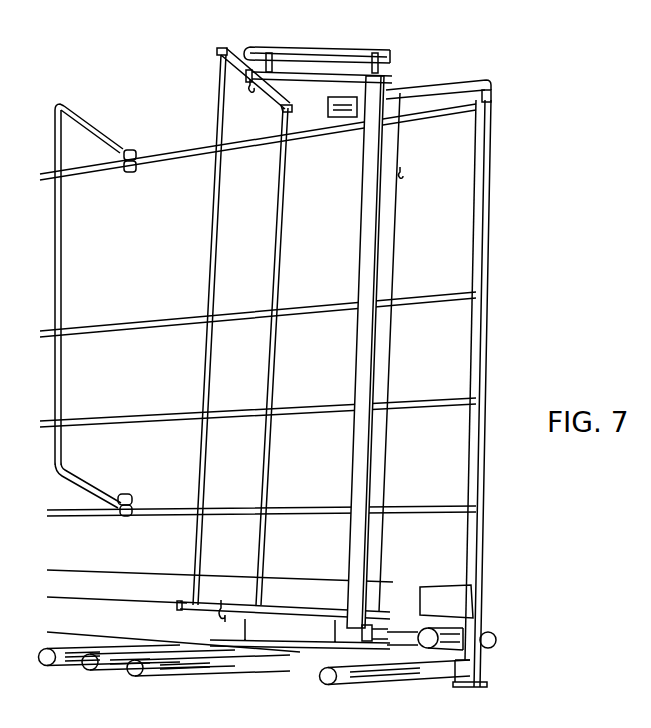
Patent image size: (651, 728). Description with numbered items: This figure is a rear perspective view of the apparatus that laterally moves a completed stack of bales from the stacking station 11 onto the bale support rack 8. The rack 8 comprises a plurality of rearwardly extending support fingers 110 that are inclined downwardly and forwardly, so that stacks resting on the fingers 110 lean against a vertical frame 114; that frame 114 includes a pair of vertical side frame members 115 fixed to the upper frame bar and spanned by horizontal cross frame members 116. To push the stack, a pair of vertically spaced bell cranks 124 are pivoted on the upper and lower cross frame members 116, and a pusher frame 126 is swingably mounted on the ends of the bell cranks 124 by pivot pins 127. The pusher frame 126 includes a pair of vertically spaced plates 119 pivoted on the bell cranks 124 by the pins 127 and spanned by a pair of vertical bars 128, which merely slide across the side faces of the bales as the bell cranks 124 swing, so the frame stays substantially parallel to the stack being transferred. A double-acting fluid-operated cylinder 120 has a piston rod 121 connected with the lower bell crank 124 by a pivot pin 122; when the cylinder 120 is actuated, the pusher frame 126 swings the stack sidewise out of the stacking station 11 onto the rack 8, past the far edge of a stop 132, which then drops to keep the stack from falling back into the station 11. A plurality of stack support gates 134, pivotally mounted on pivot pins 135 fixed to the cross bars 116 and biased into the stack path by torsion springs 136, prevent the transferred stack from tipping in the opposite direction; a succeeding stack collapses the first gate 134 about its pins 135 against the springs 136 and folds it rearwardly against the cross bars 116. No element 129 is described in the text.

The bale support rack 8 is at (65, 672).
The stacking station 11 is at (432, 545).
The support fingers 110 is at (131, 674).
The vertical frame 114 is at (493, 230).
The vertical side frame members 115 is at (488, 375).
The horizontal cross frame members 116 is at (447, 110).
The vertically spaced plates 119 is at (297, 640).
The double-acting fluid-operated cylinder 120 is at (358, 453).
The piston rod 121 is at (422, 612).
The pivot pin 122 is at (405, 58).
The bell cranks 124 is at (262, 608).
The pusher frame 126 is at (316, 43).
The pivot pins 127 is at (250, 87).
The vertical bars 128 is at (260, 457).
The bracket 129 is at (385, 610).
The stop 132 is at (458, 80).
The stack support gates 134 is at (65, 262).
The pivot pins 135 is at (128, 152).
The torsion springs 136 is at (122, 147).